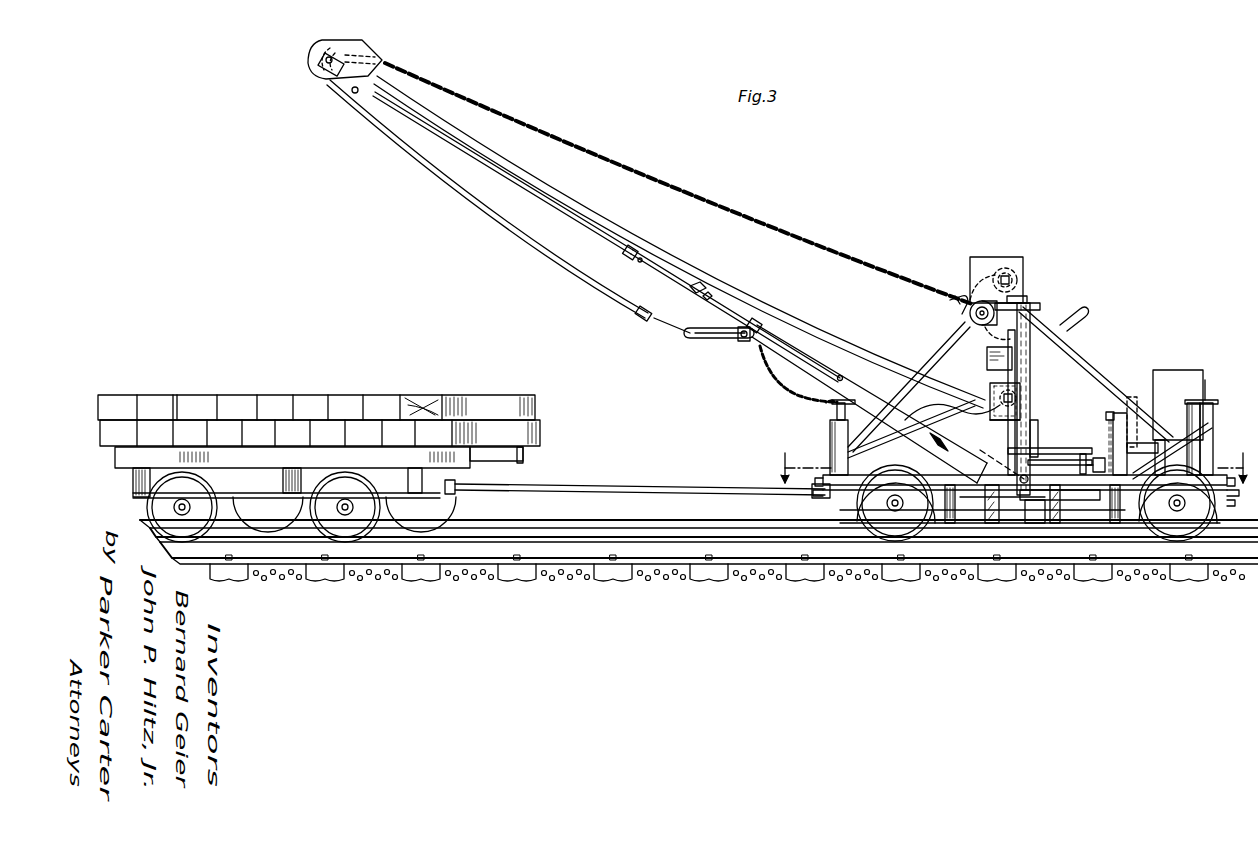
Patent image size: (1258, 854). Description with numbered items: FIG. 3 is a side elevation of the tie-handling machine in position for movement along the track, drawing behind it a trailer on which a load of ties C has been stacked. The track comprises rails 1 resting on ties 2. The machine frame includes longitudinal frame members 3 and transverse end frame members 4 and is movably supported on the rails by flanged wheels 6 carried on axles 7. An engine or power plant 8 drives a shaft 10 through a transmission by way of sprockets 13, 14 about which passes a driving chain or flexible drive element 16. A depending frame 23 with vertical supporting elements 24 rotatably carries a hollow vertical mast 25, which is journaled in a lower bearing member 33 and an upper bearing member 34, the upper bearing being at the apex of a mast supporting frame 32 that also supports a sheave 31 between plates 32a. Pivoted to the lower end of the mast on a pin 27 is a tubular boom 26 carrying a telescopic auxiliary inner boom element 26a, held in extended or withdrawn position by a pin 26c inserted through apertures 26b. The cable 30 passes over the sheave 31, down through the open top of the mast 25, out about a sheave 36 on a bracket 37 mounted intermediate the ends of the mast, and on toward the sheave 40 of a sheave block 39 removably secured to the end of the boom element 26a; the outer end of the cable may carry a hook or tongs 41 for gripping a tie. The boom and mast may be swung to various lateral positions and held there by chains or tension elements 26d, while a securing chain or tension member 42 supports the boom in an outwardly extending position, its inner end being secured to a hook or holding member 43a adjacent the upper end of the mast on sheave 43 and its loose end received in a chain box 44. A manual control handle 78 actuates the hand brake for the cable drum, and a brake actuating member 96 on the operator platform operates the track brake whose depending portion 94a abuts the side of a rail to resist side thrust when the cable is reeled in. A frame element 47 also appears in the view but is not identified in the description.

The rails 1 is at (515, 520).
The ties 2 is at (424, 581).
The longitudinal frame members 3 is at (865, 478).
The transverse end frame members 4 is at (822, 484).
The flanged wheels 6 is at (866, 508).
The axles 7 is at (895, 503).
The engine 8 is at (1185, 372).
The driven shaft 10 is at (1062, 460).
The sprocket 13 is at (1106, 415).
The sprocket 14 is at (1098, 458).
The driving chain 16 is at (1109, 428).
The depending frame 23 is at (990, 523).
The vertical supporting elements 24 is at (955, 523).
The hollow vertical mast 25 is at (1030, 383).
The tubular boom 26 is at (862, 395).
The telescopic auxiliary inner boom element 26a is at (522, 185).
The apertures 26b is at (840, 376).
The pin 26c is at (695, 292).
The chains 26d is at (778, 374).
The pivot pin 27 is at (1016, 468).
The cable 30 is at (616, 222).
The sheave 31 is at (1023, 272).
The mast supporting frame 32 is at (940, 350).
The plates 32a is at (985, 257).
The lower bearing member 33 is at (1040, 500).
The upper bearing member 34 is at (1038, 303).
The sheave 36 is at (990, 390).
The bracket 37 is at (990, 410).
The sheave block 39 is at (373, 52).
The sheave 40 is at (328, 80).
The hook or tongs 41 is at (710, 337).
The securing chain 42 is at (577, 142).
The sheave 43 is at (966, 320).
The hook 43a is at (950, 302).
The chain box 44 is at (987, 362).
The frame brace 47 is at (1055, 523).
The manual control handle 78 is at (1072, 309).
The depending portion 94a is at (1035, 523).
The brake actuating member 96 is at (1038, 430).
The load of ties C is at (303, 395).